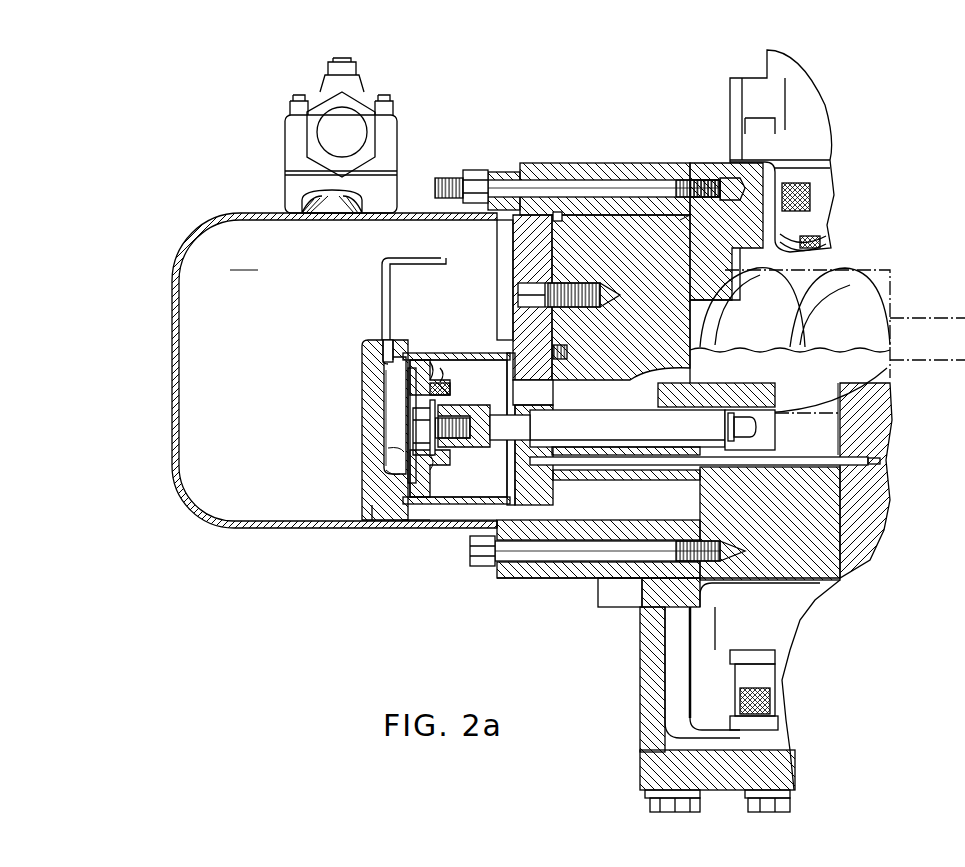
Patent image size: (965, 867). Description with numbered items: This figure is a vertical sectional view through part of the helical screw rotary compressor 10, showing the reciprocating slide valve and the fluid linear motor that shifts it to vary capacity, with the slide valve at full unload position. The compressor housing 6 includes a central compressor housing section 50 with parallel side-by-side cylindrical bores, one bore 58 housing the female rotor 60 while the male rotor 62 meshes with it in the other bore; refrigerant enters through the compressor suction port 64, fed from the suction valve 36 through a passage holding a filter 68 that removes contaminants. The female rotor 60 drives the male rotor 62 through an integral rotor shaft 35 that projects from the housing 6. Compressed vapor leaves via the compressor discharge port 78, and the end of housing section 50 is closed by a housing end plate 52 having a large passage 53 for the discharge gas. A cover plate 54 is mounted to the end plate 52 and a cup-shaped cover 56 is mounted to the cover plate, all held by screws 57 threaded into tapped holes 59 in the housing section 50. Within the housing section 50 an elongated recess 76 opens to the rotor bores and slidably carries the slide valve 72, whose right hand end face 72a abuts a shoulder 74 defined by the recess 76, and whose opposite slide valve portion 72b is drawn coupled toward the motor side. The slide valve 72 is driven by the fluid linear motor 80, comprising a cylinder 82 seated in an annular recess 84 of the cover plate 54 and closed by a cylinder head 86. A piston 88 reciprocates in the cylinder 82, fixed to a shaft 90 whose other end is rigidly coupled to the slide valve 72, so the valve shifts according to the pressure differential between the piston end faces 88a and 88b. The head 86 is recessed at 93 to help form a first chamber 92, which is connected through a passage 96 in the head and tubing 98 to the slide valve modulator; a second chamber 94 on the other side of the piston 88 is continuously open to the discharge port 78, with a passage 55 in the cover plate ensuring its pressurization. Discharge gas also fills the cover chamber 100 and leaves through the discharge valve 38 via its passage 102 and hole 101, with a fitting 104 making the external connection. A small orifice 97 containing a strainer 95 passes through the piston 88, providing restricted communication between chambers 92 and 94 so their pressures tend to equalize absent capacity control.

The compressor housing 6 is at (822, 592).
The compressor 10 is at (646, 121).
The rotor shaft 35 is at (920, 324).
The suction valve 36 is at (800, 74).
The discharge valve 38 is at (397, 160).
The central compressor housing section 50 is at (826, 560).
The housing end plate 52 is at (612, 164).
The passage 53 is at (622, 380).
The cover plate 54 is at (530, 170).
The passage 55 is at (560, 372).
The cup-shaped cover 56 is at (198, 232).
The screws 57 is at (480, 176).
The cylindrical bore 58 is at (886, 380).
The tapped holes 59 is at (704, 186).
The female rotor 60 is at (748, 262).
The male rotor 62 is at (853, 358).
The compressor suction port 64 is at (770, 260).
The filter 68 is at (808, 206).
The slide valve 72 is at (792, 436).
The right hand end face 72a is at (783, 406).
The shaft portion 72b is at (615, 411).
The shoulder 74 is at (858, 396).
The elongated recess 76 is at (820, 484).
The compressor discharge port 78 is at (706, 376).
The fluid linear motor 80 is at (427, 528).
The cylinder 82 is at (458, 520).
The annular recess 84 is at (504, 348).
The cylinder head 86 is at (372, 530).
The piston 88 is at (455, 452).
The end face 88a is at (466, 475).
The end face 88b is at (386, 480).
The shaft 90 is at (575, 424).
The first chamber 92 is at (387, 422).
The recess 93 is at (393, 451).
The second chamber 94 is at (496, 396).
The strainer or filter 95 is at (438, 370).
The passage 96 is at (376, 352).
The orifice or passage 97 is at (412, 388).
The conduit or tubing 98 is at (382, 283).
The cover chamber 100 is at (246, 260).
The hole 101 is at (332, 221).
The passage 102 is at (322, 196).
The fitting 104 is at (315, 112).